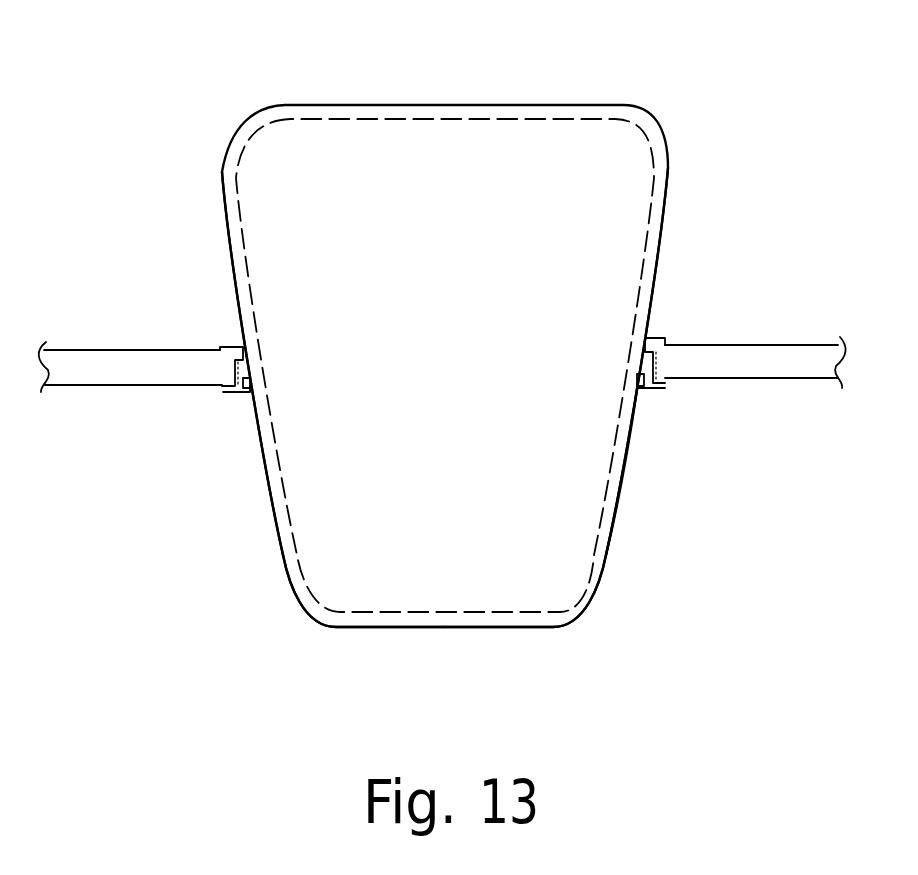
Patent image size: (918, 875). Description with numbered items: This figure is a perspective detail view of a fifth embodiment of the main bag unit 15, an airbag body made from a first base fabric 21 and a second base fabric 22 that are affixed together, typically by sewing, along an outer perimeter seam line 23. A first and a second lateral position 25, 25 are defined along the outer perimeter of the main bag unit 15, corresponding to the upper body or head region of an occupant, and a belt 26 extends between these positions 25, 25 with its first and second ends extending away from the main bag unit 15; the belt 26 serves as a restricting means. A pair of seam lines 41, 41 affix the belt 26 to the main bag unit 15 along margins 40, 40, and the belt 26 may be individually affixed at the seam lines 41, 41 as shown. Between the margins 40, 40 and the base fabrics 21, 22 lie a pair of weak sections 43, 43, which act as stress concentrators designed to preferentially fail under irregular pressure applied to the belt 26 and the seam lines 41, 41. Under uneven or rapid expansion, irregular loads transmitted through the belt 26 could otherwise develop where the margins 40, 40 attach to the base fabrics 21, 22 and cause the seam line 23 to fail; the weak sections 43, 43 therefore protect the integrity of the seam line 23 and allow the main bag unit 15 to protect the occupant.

The main bag unit 15 is at (639, 109).
The first base fabric 21 is at (591, 508).
The second base fabric 22 is at (560, 568).
The outer perimeter seam line 23 is at (291, 538).
The lateral position 25 is at (235, 334).
The belt 26 is at (95, 367).
The margin 40 is at (243, 392).
The seam line 41 is at (232, 356).
The weak section 43 is at (250, 397).